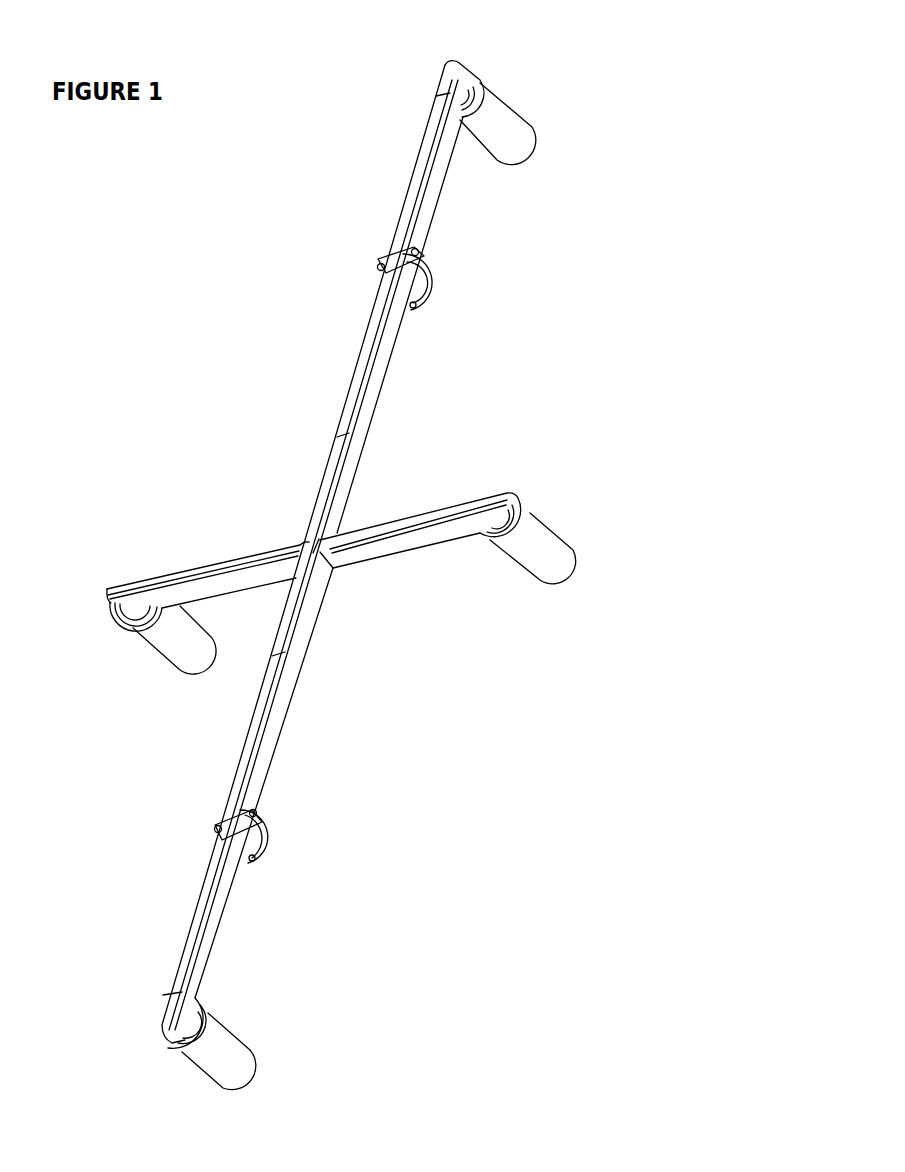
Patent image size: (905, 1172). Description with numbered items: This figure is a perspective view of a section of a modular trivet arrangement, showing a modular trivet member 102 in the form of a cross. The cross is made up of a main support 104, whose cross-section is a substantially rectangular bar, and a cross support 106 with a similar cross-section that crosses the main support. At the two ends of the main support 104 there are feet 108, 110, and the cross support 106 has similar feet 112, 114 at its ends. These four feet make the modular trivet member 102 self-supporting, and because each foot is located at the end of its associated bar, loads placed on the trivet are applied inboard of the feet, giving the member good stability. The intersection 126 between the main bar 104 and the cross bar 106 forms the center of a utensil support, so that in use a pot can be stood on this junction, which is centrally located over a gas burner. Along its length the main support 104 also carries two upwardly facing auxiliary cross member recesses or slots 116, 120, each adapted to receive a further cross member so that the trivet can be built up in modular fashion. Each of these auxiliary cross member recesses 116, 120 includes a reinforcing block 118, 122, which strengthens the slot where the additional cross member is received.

The modular trivet member 102 is at (190, 205).
The main support 104 is at (333, 420).
The cross support 106 is at (235, 560).
The foot 108 is at (533, 127).
The foot 110 is at (251, 1052).
The foot 112 is at (175, 650).
The foot 114 is at (558, 532).
The auxiliary cross member recess 116 is at (380, 266).
The reinforcing block 118 is at (438, 278).
The auxiliary cross member recess 120 is at (214, 827).
The reinforcing block 122 is at (273, 837).
The intersection 126 is at (305, 547).